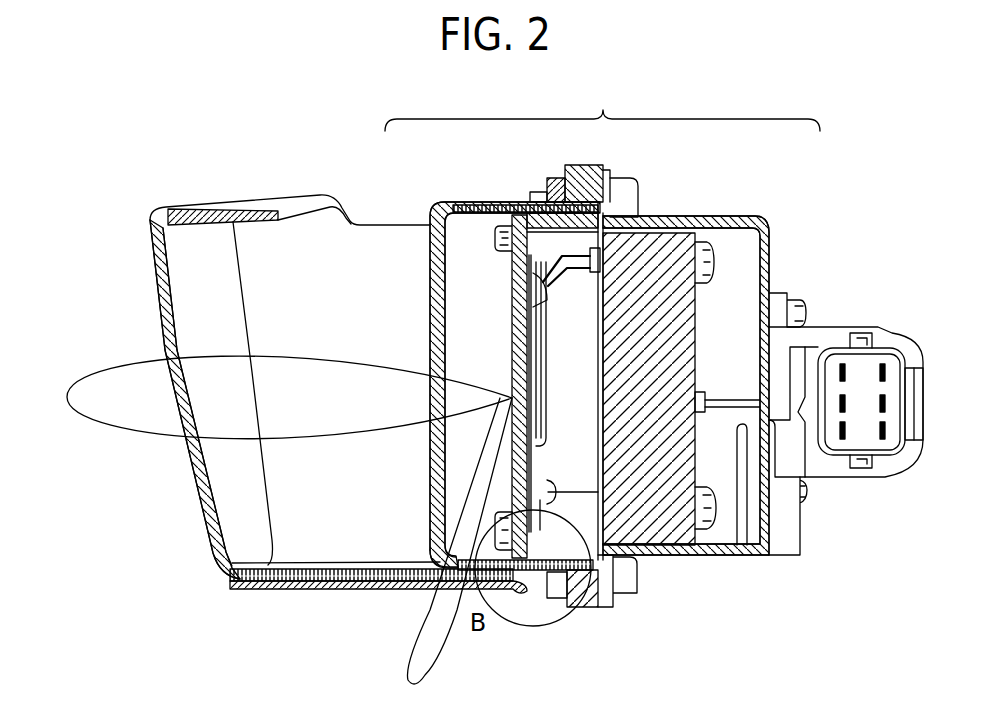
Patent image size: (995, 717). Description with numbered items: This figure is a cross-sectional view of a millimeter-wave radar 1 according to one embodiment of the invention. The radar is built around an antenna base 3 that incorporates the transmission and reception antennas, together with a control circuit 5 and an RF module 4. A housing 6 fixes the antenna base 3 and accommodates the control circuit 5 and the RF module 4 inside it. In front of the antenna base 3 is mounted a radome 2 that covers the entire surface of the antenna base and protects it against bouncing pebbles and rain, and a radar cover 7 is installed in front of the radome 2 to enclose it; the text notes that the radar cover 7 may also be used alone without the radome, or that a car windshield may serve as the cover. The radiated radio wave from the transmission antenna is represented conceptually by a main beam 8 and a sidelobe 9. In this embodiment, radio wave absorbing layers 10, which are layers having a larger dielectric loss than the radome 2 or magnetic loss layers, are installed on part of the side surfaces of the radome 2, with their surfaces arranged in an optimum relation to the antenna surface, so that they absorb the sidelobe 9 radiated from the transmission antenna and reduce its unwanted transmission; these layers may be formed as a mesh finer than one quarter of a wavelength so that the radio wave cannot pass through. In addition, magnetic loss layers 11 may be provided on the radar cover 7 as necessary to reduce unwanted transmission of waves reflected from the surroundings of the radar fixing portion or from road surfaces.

The motor unit 1 is at (602, 105).
The radome 2 is at (436, 211).
The antenna base 3 is at (511, 287).
The RF module 4 is at (630, 283).
The control circuit 5 is at (700, 311).
The housing 6 is at (735, 556).
The radar cover 7 is at (203, 218).
The main beam 8 is at (122, 440).
The sidelobe 9 is at (408, 640).
The radio wave absorbing layers 10 is at (490, 205).
The magnetic loss layers 11 is at (275, 586).